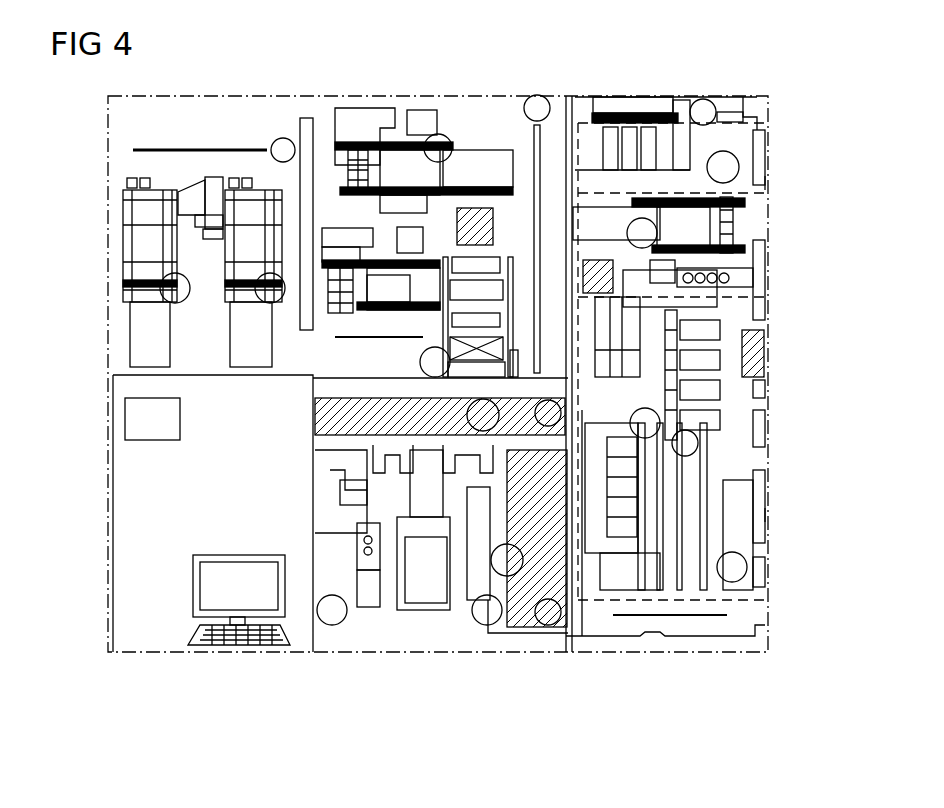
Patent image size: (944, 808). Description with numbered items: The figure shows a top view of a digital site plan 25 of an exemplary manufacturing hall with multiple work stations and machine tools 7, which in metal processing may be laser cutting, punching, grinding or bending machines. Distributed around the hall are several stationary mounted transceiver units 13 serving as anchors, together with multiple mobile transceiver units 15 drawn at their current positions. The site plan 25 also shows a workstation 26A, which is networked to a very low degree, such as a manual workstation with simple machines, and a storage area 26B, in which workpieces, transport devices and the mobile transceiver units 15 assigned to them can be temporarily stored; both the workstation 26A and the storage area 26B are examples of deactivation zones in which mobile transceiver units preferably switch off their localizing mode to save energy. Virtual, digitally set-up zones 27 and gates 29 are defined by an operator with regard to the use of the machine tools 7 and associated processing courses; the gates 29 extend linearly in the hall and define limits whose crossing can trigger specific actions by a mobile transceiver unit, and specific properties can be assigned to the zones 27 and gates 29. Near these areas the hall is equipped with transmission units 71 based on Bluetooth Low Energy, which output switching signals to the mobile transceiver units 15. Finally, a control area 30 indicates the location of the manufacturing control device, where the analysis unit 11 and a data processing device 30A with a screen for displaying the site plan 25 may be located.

The machine tool 7 is at (228, 246).
The analysis unit 11 is at (180, 432).
The stationary mounted transceiver unit 13 is at (453, 379).
The mobile transceiver unit 15 is at (603, 363).
The digital site plan 25 is at (785, 114).
The workstation 26A is at (768, 515).
The storage area 26B is at (768, 182).
The zone 27 is at (476, 200).
The gate 29 is at (135, 150).
The control area 30 is at (124, 522).
The data processing device 30A is at (250, 555).
The transmission unit 71 is at (272, 142).